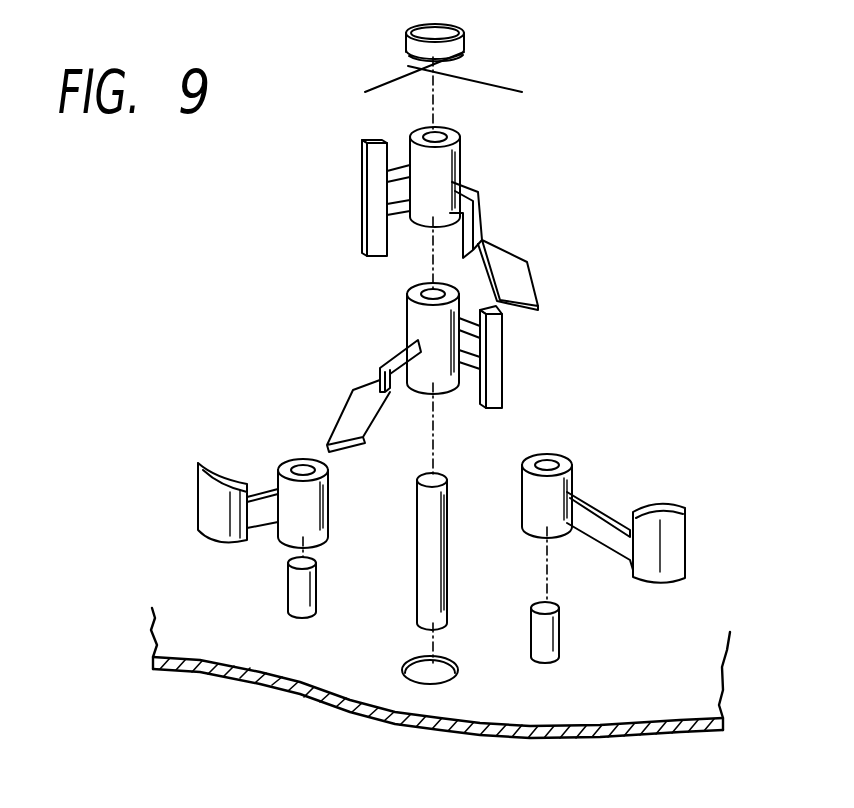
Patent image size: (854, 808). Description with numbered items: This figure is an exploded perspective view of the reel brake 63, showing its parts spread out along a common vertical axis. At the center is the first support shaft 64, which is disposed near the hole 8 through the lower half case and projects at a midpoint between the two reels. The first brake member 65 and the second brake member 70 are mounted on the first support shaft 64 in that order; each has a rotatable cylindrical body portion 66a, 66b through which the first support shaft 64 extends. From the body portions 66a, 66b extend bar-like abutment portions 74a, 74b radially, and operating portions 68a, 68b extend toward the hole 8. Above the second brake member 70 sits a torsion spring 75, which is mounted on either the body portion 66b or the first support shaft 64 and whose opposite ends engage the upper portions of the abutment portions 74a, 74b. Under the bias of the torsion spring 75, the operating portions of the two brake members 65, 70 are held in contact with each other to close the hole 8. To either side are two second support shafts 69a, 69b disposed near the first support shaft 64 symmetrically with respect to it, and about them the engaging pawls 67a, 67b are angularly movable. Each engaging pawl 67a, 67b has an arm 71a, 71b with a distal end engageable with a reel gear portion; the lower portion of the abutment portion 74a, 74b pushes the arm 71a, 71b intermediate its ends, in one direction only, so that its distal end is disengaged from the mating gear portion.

The hole 8 is at (443, 660).
The reel brake 63 is at (385, 62).
The first support shaft 64 is at (428, 536).
The first brake member 65 is at (445, 379).
The body portion 66a is at (413, 312).
The body portion 66b is at (442, 162).
The engaging pawl 67a is at (205, 508).
The engaging pawl 67b is at (672, 547).
The operating portion 68a is at (353, 413).
The operating portion 68b is at (508, 264).
The second support shaft 69a is at (305, 589).
The second support shaft 69b is at (532, 622).
The second brake member 70 is at (444, 223).
The arm 71a is at (262, 512).
The arm 71b is at (592, 518).
The abutment portion 74a is at (505, 385).
The abutment portion 74b is at (375, 203).
The torsion spring 75 is at (493, 83).